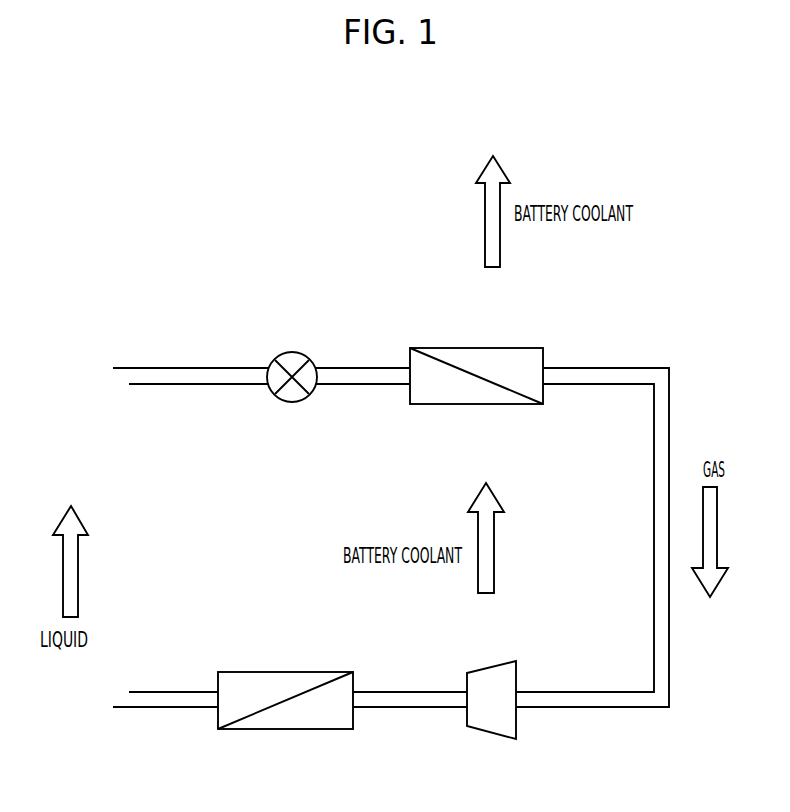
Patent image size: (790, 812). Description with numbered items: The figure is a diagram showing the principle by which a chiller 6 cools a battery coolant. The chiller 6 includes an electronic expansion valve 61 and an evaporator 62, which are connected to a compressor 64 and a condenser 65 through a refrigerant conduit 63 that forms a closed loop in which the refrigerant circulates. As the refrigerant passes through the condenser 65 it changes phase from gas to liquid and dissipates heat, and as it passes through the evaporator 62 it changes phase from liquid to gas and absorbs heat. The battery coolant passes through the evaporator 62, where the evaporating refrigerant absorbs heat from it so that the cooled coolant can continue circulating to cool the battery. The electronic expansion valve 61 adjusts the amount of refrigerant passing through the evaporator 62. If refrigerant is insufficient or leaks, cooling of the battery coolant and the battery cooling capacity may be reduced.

The chiller 6 is at (440, 283).
The electronic expansion valve 61 is at (302, 352).
The evaporator 62 is at (428, 348).
The refrigerant conduit 63 is at (631, 368).
The compressor 64 is at (494, 735).
The condenser 65 is at (305, 729).